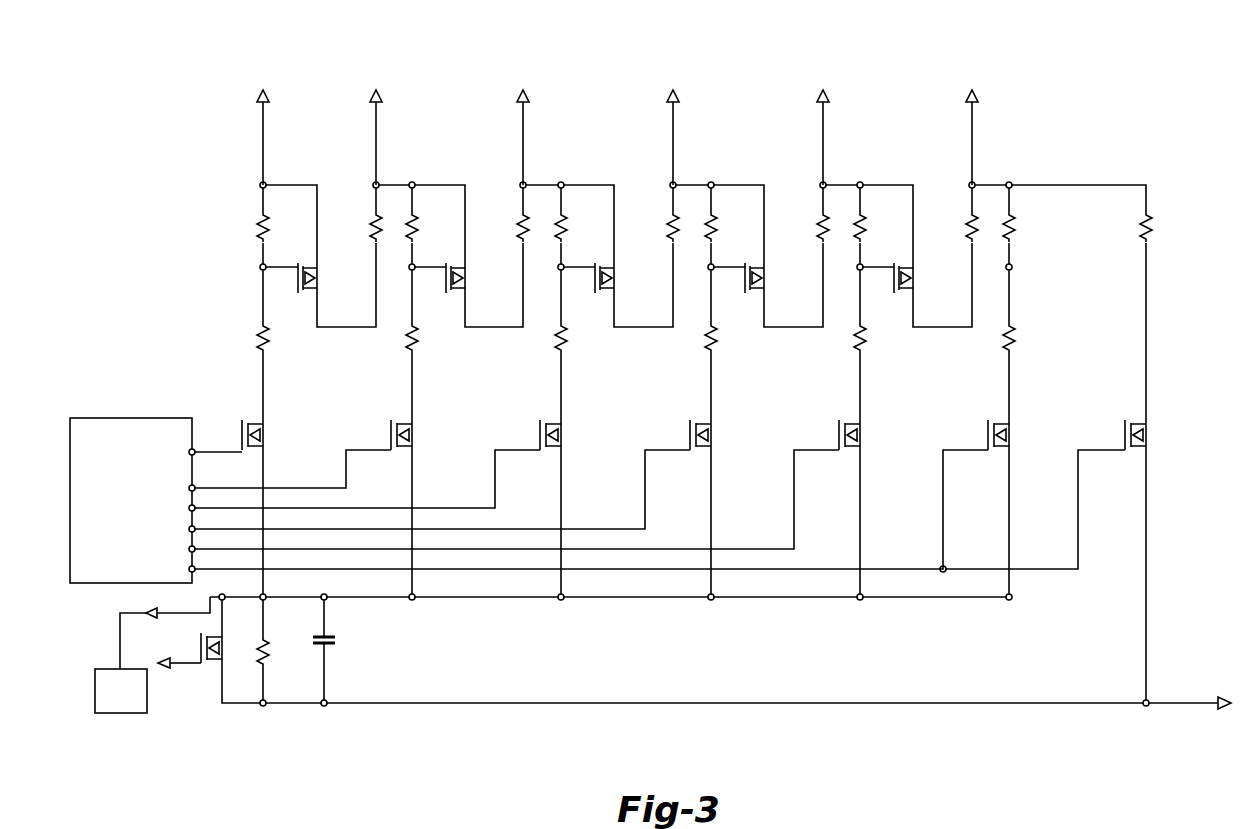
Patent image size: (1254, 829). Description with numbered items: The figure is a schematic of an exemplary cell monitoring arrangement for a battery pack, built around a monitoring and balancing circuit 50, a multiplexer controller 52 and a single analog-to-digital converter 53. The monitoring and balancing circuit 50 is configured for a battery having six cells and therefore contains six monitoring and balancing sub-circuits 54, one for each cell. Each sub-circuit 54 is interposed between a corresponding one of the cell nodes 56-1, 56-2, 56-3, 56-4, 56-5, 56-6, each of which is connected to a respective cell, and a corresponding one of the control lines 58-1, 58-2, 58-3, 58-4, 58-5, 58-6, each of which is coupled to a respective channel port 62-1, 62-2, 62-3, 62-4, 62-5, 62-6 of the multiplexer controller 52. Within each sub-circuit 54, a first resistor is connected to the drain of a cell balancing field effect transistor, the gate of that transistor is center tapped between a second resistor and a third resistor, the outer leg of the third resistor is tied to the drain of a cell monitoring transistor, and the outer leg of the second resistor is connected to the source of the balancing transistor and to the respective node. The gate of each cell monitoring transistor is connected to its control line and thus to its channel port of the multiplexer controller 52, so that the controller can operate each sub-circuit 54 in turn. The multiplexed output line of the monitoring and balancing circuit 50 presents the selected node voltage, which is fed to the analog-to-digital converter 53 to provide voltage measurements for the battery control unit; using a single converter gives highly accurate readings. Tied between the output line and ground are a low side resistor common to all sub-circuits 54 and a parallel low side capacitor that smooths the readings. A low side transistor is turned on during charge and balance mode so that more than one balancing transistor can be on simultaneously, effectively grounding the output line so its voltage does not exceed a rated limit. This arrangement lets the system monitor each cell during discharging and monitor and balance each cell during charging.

The monitoring and balancing circuit 50 is at (1102, 90).
The multiplexer controller 52 is at (104, 418).
The analog-to-digital converter 53 is at (127, 713).
The monitoring and balancing sub-circuit 54 is at (327, 348).
The cell node 56-1 is at (972, 88).
The cell node 56-2 is at (823, 88).
The cell node 56-3 is at (673, 88).
The cell node 56-4 is at (523, 88).
The cell node 56-5 is at (376, 88).
The cell node 56-6 is at (263, 88).
The control line 58-1 is at (590, 510).
The control line 58-2 is at (515, 500).
The control line 58-3 is at (441, 490).
The control line 58-4 is at (366, 480).
The control line 58-5 is at (291, 469).
The control line 58-6 is at (217, 442).
The channel port 62-1 is at (176, 567).
The channel port 62-2 is at (176, 547).
The channel port 62-3 is at (176, 527).
The channel port 62-4 is at (176, 506).
The channel port 62-5 is at (176, 486).
The channel port 62-6 is at (176, 450).